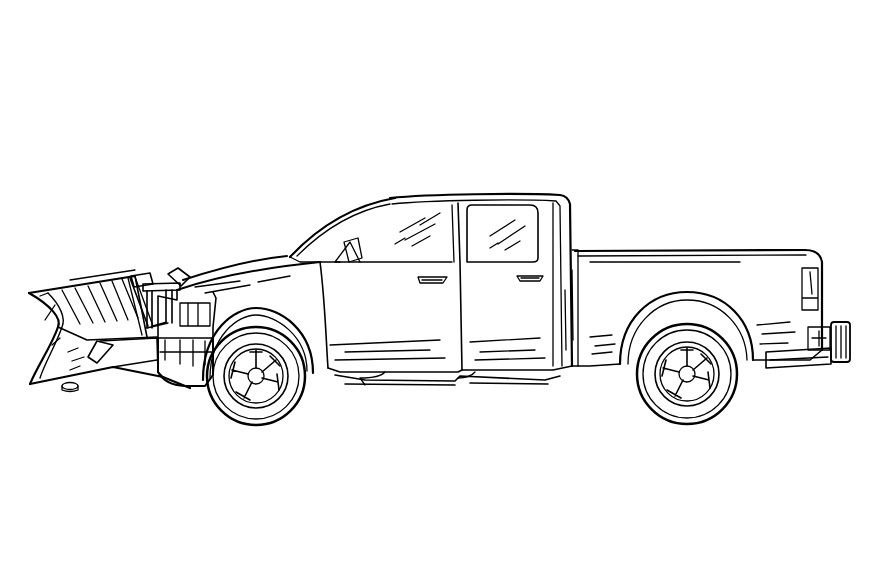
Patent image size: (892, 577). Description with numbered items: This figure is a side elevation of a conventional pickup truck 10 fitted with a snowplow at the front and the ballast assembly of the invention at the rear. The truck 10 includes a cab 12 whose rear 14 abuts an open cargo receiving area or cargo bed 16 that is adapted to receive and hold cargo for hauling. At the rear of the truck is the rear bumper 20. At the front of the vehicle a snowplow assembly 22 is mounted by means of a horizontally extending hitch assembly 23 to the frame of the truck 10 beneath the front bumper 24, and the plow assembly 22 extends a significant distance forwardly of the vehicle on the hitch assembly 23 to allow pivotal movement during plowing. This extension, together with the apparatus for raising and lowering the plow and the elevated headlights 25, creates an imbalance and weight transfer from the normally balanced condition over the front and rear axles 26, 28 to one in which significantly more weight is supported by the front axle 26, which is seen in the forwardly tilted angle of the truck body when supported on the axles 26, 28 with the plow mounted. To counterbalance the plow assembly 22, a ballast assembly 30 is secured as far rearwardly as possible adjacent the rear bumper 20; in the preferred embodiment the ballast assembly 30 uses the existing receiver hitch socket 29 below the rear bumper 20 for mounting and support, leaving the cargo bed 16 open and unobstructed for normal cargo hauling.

The pickup truck 10 is at (604, 131).
The cab 12 is at (463, 196).
The rear of the cab 14 is at (575, 233).
The cargo bed 16 is at (693, 253).
The rear bumper 20 is at (774, 378).
The snowplow assembly 22 is at (96, 275).
The hitch assembly 23 is at (133, 382).
The front bumper 24 is at (178, 385).
The elevated headlights 25 is at (140, 272).
The front axle 26 is at (256, 378).
The rear axle 28 is at (687, 374).
The receiver hitch socket 29 is at (815, 356).
The ballast assembly 30 is at (842, 318).